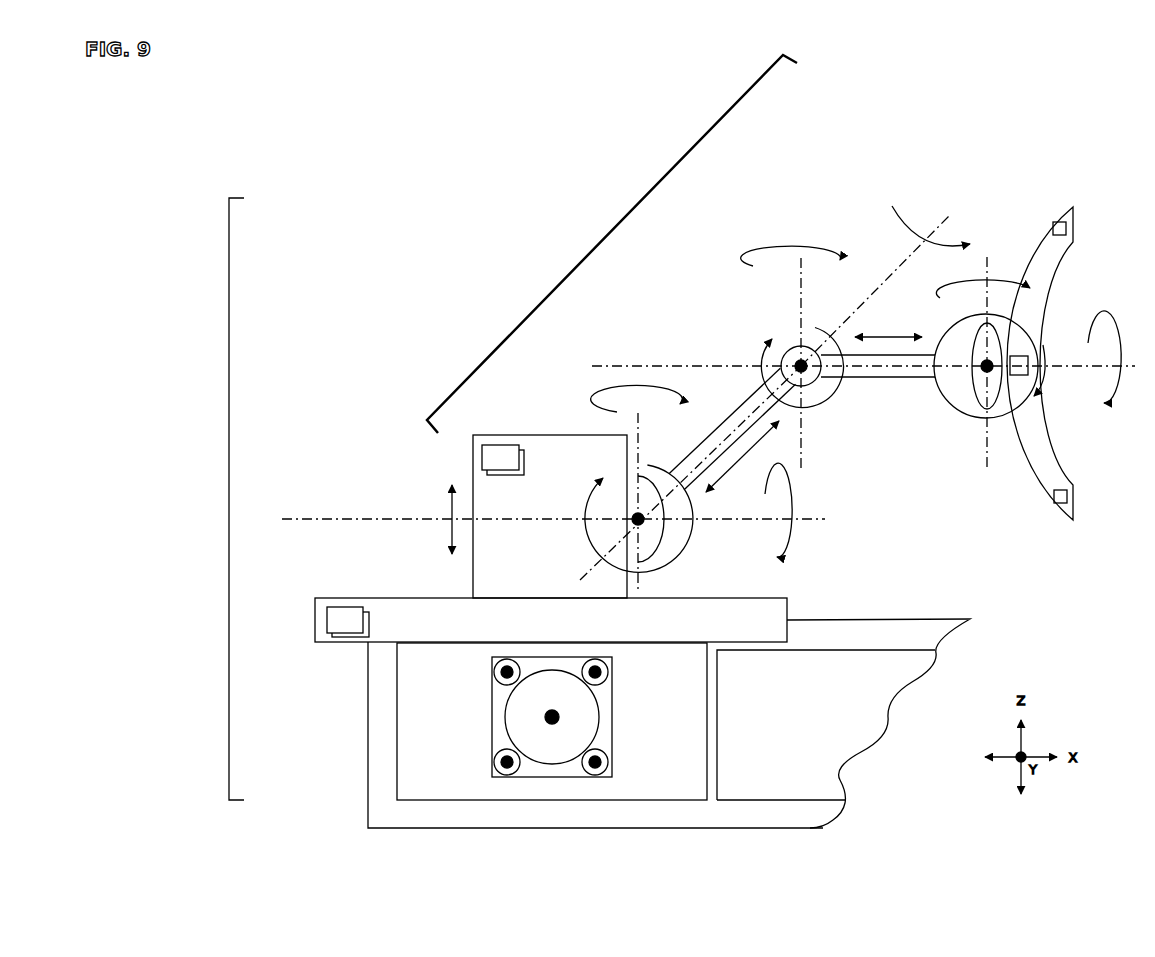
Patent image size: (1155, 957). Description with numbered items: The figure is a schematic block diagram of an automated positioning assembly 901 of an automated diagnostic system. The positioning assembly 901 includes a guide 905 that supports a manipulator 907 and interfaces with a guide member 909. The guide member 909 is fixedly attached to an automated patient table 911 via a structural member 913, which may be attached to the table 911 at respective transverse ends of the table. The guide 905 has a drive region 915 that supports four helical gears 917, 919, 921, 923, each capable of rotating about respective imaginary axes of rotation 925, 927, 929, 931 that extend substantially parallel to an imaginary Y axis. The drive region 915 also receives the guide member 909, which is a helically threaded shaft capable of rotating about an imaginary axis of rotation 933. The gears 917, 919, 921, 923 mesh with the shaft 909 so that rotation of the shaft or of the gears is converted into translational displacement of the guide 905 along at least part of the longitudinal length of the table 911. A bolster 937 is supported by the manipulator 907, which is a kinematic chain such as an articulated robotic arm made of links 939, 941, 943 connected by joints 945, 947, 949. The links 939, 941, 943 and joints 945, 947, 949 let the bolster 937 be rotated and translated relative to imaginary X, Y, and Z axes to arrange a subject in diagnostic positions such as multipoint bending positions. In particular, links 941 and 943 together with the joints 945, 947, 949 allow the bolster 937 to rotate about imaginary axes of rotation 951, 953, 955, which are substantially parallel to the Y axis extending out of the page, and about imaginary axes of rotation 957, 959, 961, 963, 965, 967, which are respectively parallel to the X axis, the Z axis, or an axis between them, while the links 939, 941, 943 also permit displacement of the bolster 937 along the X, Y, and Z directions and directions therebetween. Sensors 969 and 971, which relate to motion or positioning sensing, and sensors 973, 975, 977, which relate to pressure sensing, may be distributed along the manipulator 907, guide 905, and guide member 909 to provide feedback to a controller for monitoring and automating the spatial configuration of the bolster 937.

The positioning assembly 901 is at (229, 499).
The guide 905 is at (428, 802).
The manipulator 907 is at (605, 238).
The guide member 909 is at (503, 724).
The automated patient table 911 is at (870, 648).
The structural member 913 is at (600, 830).
The drive region 915 is at (612, 725).
The helical gear 917 is at (602, 668).
The helical gear 919 is at (609, 750).
The helical gear 921 is at (515, 770).
The helical gear 923 is at (493, 678).
The imaginary axis of rotation 925 is at (593, 660).
The imaginary axis of rotation 927 is at (607, 770).
The imaginary axis of rotation 929 is at (495, 768).
The imaginary axis of rotation 931 is at (505, 660).
The imaginary axis of rotation 933 is at (560, 716).
The bolster 937 is at (1038, 230).
The link 939 is at (473, 590).
The link 941 is at (721, 424).
The link 943 is at (893, 378).
The joint 945 is at (662, 548).
The joint 947 is at (788, 348).
The joint 949 is at (1000, 410).
The imaginary axis of rotation 951 is at (656, 522).
The imaginary axis of rotation 953 is at (822, 393).
The imaginary axis of rotation 955 is at (980, 381).
The imaginary axis of rotation 957 is at (360, 521).
The imaginary axis of rotation 959 is at (642, 418).
The imaginary axis of rotation 961 is at (882, 242).
The imaginary axis of rotation 963 is at (805, 292).
The imaginary axis of rotation 965 is at (672, 366).
The imaginary axis of rotation 967 is at (986, 464).
The sensor 969 is at (345, 636).
The sensor 971 is at (498, 445).
The sensor 973 is at (1067, 228).
The sensor 975 is at (1030, 362).
The sensor 977 is at (1067, 496).